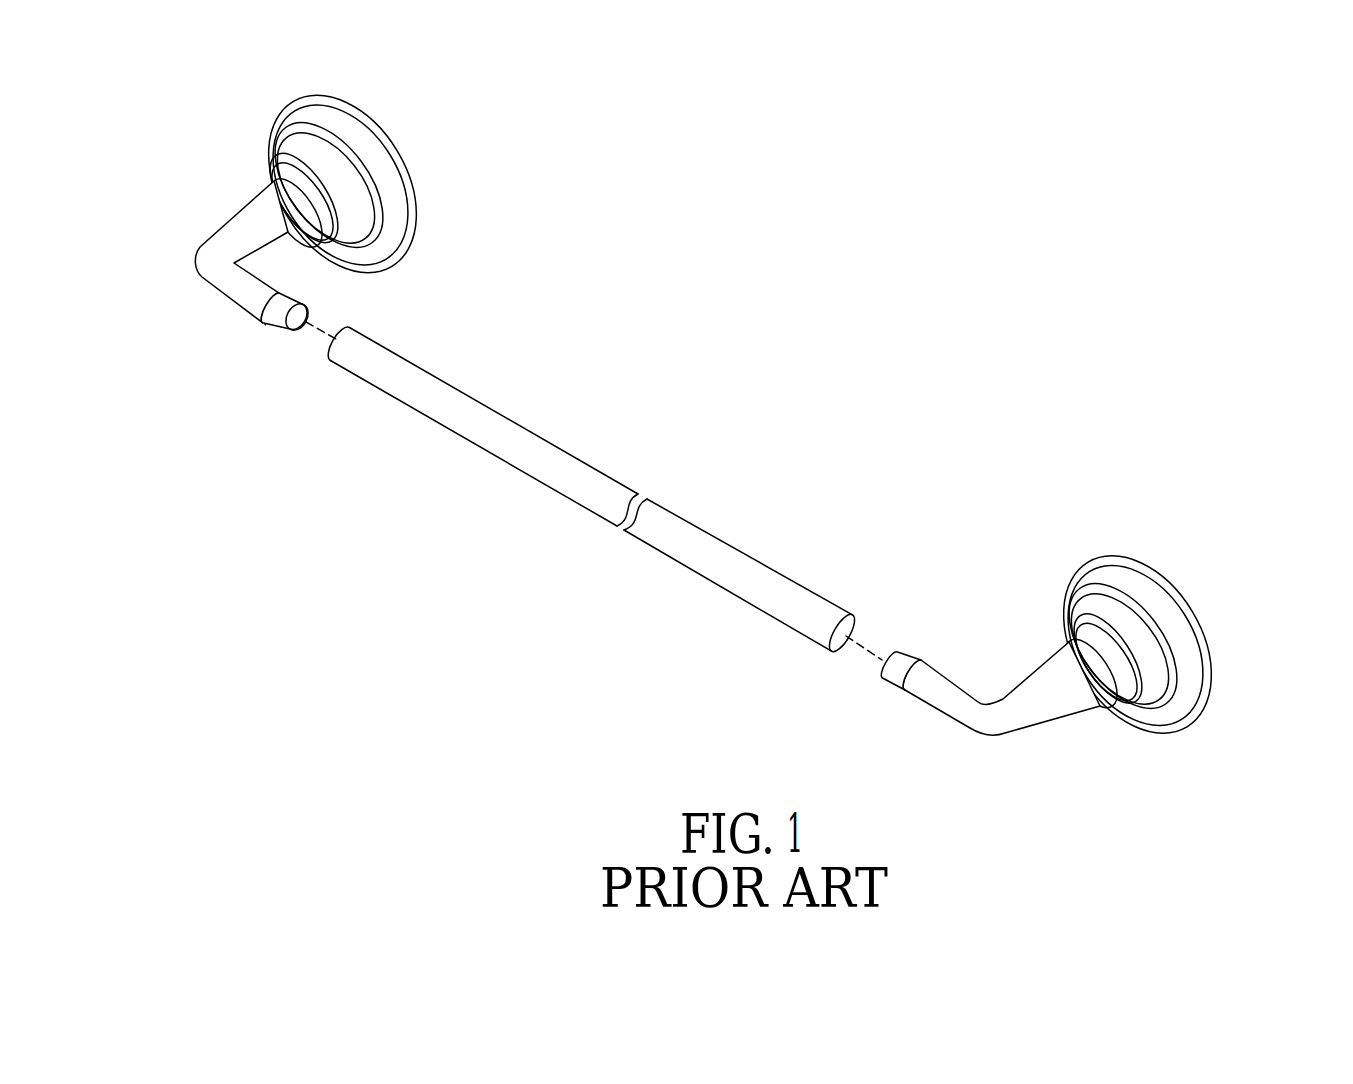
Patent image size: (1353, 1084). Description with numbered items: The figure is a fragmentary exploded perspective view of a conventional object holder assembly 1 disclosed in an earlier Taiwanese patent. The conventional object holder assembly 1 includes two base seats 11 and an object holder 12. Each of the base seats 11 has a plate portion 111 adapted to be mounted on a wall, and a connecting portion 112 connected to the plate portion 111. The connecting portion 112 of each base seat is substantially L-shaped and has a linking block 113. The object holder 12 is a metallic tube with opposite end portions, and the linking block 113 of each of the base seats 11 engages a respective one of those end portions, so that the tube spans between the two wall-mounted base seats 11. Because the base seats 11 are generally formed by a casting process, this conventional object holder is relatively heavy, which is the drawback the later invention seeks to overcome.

The conventional object holder assembly 1 is at (712, 448).
The base seat 11 is at (712, 448).
The plate portion 111 is at (392, 245).
The connecting portion 112 is at (218, 273).
The linking block 113 is at (283, 318).
The object holder 12 is at (718, 560).